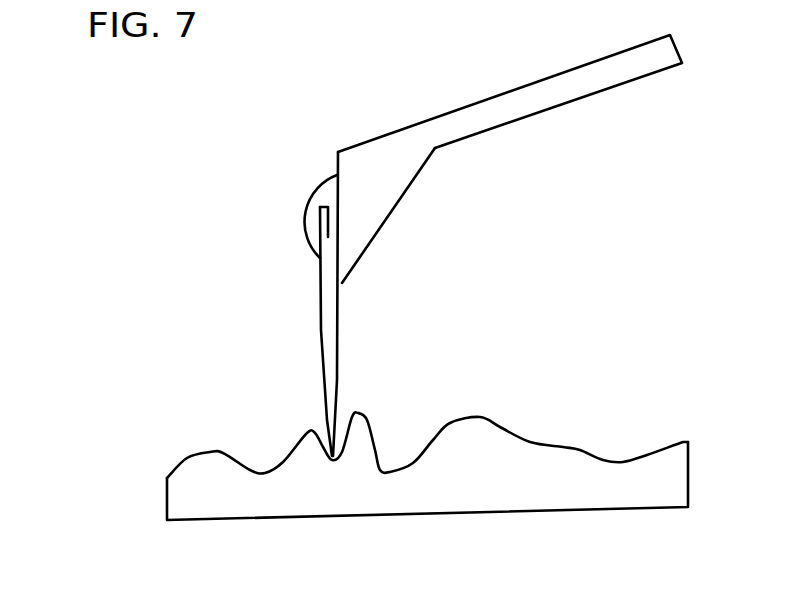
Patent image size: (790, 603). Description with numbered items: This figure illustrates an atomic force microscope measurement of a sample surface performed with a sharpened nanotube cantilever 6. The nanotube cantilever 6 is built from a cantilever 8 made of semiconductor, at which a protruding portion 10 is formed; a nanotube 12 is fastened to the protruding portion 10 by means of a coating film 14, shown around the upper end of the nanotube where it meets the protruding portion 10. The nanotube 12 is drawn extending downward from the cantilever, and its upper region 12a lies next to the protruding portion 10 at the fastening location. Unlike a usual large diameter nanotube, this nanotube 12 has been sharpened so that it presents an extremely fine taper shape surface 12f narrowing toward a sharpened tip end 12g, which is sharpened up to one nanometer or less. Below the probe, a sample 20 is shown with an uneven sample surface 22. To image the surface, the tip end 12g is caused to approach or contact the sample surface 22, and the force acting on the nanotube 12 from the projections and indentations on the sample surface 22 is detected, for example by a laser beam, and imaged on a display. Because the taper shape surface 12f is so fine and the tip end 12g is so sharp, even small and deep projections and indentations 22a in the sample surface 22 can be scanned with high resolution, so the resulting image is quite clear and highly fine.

The nanotube cantilever 6 is at (492, 88).
The cantilever 8 is at (563, 92).
The protruding portion 10 is at (387, 183).
The nanotube 12 is at (315, 315).
The blade base portion 12a is at (328, 243).
The taper shape surface 12f is at (342, 378).
The tip end portion 12g is at (333, 462).
The coating film 14 is at (323, 193).
The sample 20 is at (555, 490).
The sample surface 22 is at (577, 447).
The projections and indentations 22a is at (320, 452).